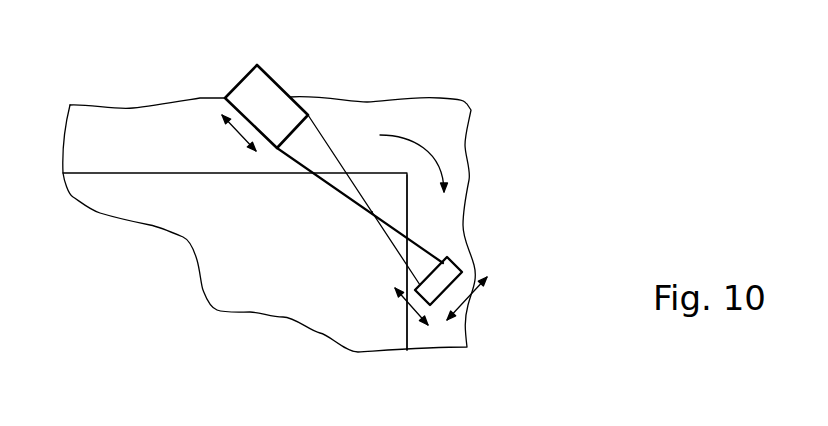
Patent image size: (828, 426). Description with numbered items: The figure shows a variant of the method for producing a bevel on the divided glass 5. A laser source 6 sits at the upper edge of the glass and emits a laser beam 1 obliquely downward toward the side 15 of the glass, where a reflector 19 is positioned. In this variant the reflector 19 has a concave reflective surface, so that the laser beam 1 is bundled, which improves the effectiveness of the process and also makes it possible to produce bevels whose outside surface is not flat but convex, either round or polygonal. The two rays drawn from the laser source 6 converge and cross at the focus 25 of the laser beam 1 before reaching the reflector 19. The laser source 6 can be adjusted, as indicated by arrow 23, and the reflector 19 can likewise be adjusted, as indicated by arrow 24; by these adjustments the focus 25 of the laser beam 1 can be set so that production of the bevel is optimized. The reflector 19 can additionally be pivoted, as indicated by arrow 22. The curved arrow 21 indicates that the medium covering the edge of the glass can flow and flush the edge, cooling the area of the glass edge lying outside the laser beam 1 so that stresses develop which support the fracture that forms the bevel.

The laser beam 1 is at (320, 135).
The divided glass 5 is at (257, 227).
The laser source 6 is at (268, 98).
The side 15 is at (417, 230).
The reflector 19 is at (438, 287).
The arrow 21 is at (442, 158).
The arrow 22 is at (473, 292).
The arrow 23 is at (242, 137).
The arrow 24 is at (413, 306).
The focus 25 is at (370, 213).